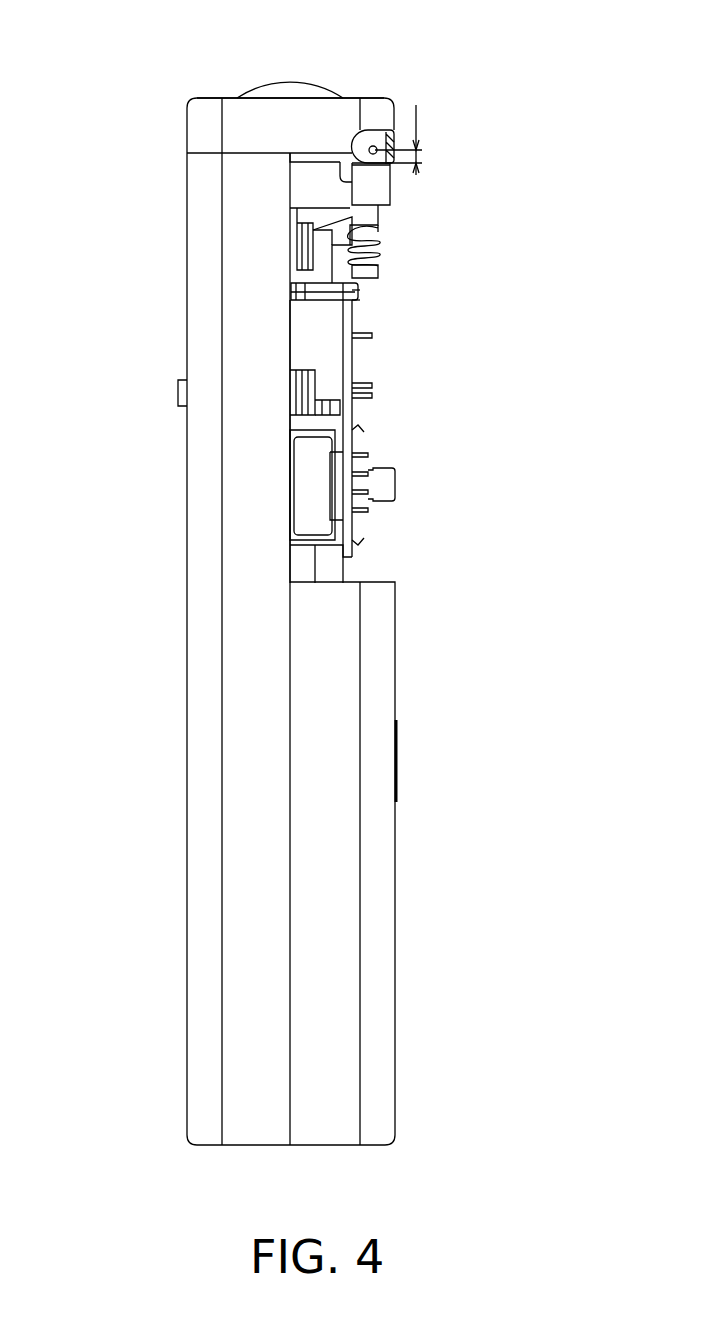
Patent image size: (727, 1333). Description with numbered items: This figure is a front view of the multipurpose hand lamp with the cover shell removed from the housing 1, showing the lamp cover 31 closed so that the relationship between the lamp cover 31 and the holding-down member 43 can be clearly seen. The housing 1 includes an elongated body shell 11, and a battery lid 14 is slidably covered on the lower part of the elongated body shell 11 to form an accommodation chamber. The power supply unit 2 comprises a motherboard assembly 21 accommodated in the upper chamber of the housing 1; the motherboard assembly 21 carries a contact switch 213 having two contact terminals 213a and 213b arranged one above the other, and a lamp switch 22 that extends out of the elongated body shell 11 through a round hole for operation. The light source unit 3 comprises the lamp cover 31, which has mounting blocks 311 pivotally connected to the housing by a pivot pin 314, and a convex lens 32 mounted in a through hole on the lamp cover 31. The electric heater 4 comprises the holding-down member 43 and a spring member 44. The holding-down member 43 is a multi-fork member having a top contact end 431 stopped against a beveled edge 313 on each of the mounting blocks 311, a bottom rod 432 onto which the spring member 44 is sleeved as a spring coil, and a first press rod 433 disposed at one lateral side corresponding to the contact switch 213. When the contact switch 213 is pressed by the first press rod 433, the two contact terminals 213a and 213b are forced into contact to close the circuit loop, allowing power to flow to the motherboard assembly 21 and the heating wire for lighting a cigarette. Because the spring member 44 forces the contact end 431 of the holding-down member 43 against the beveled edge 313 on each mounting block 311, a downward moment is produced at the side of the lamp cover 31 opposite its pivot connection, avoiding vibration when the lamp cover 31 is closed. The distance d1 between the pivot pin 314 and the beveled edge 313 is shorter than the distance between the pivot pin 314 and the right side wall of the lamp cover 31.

The housing 1 is at (125, 205).
The power supply unit 2 is at (418, 428).
The light source unit 3 is at (175, 100).
The electric heater 4 is at (432, 222).
The elongated body shell 11 is at (207, 290).
The battery lid 14 is at (385, 773).
The motherboard assembly 21 is at (345, 365).
The lamp switch 22 is at (178, 387).
The lamp cover 31 is at (310, 115).
The convex lens 32 is at (285, 86).
The holding-down member 43 is at (385, 190).
The spring member 44 is at (385, 236).
The contact switch 213 is at (300, 295).
The contact terminal 213a is at (352, 296).
The contact terminal 213b is at (352, 312).
The mounting block 311 is at (370, 132).
The beveled edge 313 is at (360, 137).
The pivot pin 314 is at (372, 142).
The top contact end 431 is at (383, 180).
The bottom rod 432 is at (370, 270).
The first press rod 433 is at (320, 265).
The distance d1 is at (411, 140).